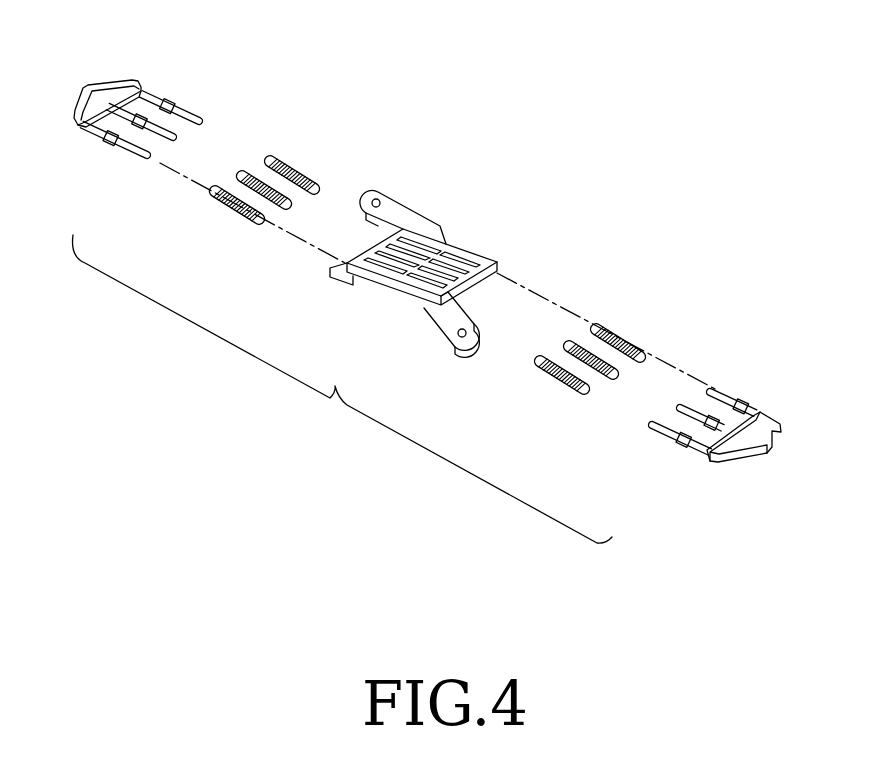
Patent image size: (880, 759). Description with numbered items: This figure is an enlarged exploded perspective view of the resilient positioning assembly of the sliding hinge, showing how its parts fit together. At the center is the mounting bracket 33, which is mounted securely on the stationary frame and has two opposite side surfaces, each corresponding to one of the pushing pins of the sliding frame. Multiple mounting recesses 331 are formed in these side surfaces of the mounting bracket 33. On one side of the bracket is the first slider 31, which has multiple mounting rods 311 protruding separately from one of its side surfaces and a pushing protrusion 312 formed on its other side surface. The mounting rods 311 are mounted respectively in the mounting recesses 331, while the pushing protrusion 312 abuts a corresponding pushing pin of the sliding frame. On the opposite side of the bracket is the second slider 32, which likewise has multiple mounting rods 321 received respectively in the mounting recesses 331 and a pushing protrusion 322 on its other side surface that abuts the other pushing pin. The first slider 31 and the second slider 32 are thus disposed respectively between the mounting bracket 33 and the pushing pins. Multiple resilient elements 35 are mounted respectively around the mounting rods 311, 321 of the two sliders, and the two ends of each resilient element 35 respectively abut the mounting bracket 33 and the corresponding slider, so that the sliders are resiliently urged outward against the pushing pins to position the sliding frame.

The first slider 31 is at (173, 70).
The mounting rods 311 is at (188, 110).
The pushing protrusion 312 is at (107, 88).
The second slider 32 is at (667, 462).
The mounting rods 321 is at (717, 398).
The pushing protrusion 322 is at (760, 445).
The mounting bracket 33 is at (437, 228).
The mounting recesses 331 is at (500, 272).
The resilient elements 35 is at (292, 165).